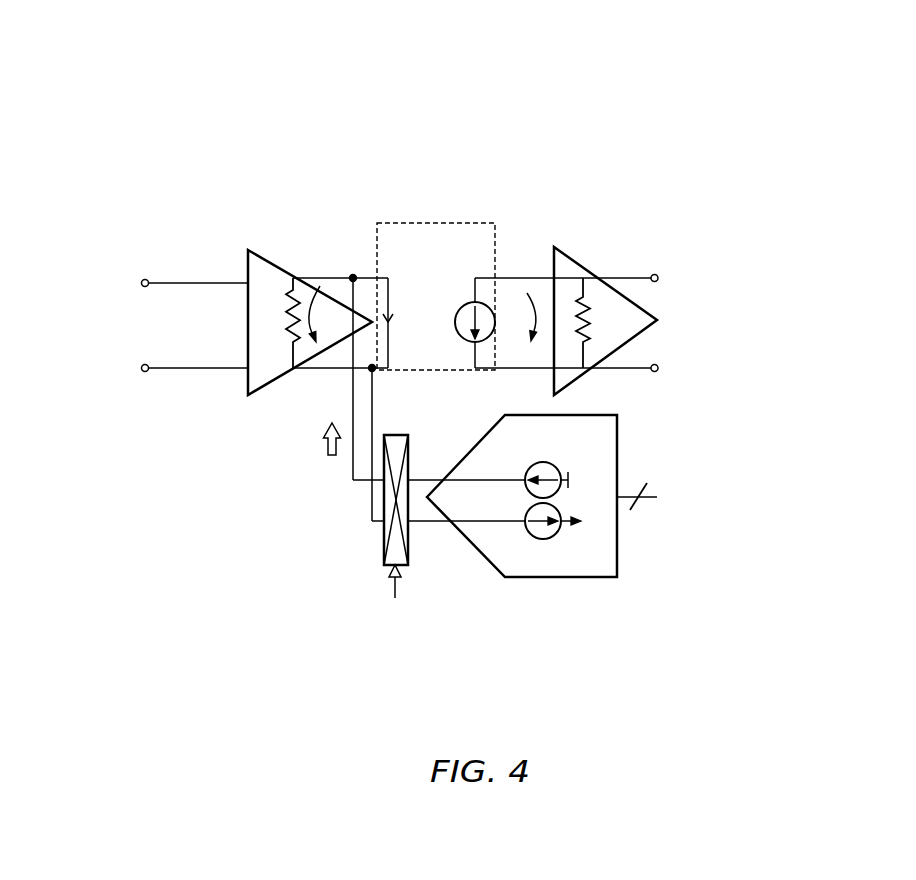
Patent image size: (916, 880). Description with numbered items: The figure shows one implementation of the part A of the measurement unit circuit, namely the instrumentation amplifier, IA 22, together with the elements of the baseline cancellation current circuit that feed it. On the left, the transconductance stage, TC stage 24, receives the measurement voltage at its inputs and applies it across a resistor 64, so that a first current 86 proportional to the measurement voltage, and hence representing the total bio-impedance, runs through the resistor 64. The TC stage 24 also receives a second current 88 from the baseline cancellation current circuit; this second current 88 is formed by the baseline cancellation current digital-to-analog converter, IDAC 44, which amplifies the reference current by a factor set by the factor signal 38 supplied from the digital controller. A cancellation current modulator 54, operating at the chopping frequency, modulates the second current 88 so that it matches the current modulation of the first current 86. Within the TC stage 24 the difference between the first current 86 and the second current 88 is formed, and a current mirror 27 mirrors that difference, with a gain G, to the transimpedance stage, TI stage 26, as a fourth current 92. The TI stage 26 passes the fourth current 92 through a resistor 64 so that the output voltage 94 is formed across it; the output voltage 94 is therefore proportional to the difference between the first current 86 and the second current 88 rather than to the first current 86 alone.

The part A is at (784, 114).
The instrumentation amplifier (IA) 22 is at (258, 239).
The transconductance stage 24 is at (267, 384).
The transimpedance stage 26 is at (577, 377).
The current mirror 27 is at (497, 250).
The factor signal 38 is at (640, 503).
The baseline cancellation current digital-to-analog converter (IDAC) 44 is at (563, 578).
The cancellation current modulator 54 is at (410, 547).
The resistor 64 is at (303, 292).
The first current 86 is at (314, 352).
The second current 88 is at (330, 457).
The fourth current 92 is at (531, 343).
The output voltage 94 is at (781, 350).